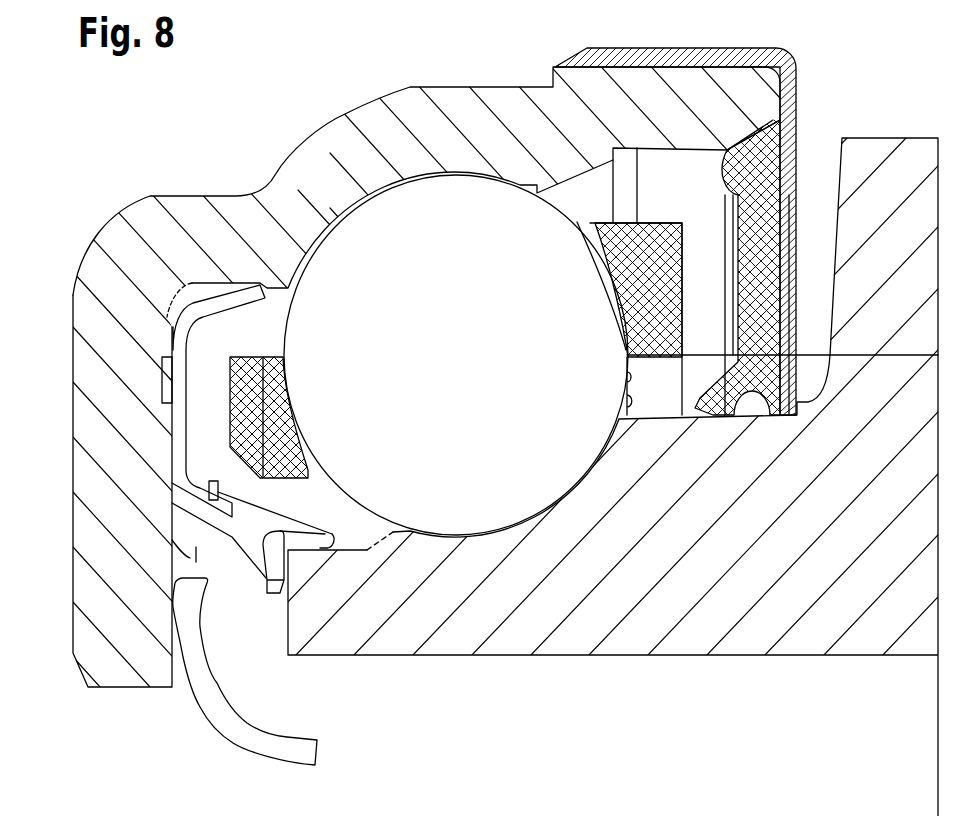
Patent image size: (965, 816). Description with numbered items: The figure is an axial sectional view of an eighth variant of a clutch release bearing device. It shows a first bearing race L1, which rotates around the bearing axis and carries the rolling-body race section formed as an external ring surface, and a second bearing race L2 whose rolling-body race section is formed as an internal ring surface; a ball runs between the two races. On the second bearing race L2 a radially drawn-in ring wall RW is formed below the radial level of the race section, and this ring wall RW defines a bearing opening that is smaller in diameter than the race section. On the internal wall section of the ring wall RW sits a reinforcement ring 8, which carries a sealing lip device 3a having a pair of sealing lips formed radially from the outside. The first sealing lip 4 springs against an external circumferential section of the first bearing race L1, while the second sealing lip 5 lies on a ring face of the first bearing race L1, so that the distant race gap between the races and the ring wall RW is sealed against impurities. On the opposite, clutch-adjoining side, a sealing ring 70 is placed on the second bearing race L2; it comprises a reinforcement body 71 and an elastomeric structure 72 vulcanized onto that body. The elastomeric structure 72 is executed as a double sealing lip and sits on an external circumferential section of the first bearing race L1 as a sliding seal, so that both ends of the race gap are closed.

The second bearing race L2 is at (352, 97).
The first bearing race L1 is at (455, 643).
The radial drawn-in ring wall RW is at (98, 485).
The reinforcement ring 8 is at (175, 325).
The sealing lip device 3a is at (321, 497).
The first sealing lip 4 is at (322, 535).
The second sealing lip 5 is at (272, 588).
The sealing ring 70 is at (736, 231).
The reinforcement body 71 is at (800, 90).
The elastomeric structure 72 is at (748, 348).